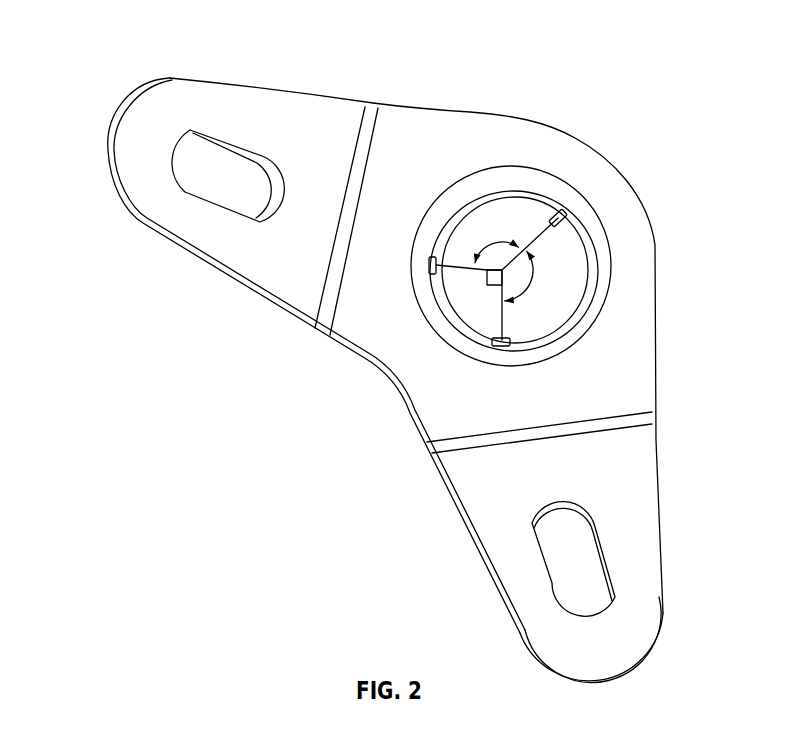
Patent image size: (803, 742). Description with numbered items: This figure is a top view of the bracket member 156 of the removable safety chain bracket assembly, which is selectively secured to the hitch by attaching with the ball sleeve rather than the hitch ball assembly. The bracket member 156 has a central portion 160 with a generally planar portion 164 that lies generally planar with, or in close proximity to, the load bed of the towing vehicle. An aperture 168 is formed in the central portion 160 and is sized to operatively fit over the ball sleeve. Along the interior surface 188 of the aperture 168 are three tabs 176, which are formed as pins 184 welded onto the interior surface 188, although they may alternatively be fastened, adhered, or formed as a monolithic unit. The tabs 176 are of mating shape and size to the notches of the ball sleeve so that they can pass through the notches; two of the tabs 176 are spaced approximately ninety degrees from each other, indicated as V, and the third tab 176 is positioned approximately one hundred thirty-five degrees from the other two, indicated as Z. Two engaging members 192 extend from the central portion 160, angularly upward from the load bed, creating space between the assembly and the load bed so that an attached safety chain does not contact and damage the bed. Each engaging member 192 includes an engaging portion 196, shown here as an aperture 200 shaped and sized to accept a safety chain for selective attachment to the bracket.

The bracket member 156 is at (318, 436).
The central portion 160 is at (593, 162).
The generally planar portion 164 is at (643, 303).
The aperture 168 is at (603, 250).
The tab 176 is at (442, 258).
The pin 184 is at (558, 213).
The interior surface 188 is at (528, 195).
The engaging member 192 is at (133, 163).
The engaging portion 196 is at (222, 142).
The aperture 200 is at (223, 203).
The angular spacing of approximately 135 degrees Z is at (493, 240).
The angular spacing of approximately 90 degrees V is at (487, 277).